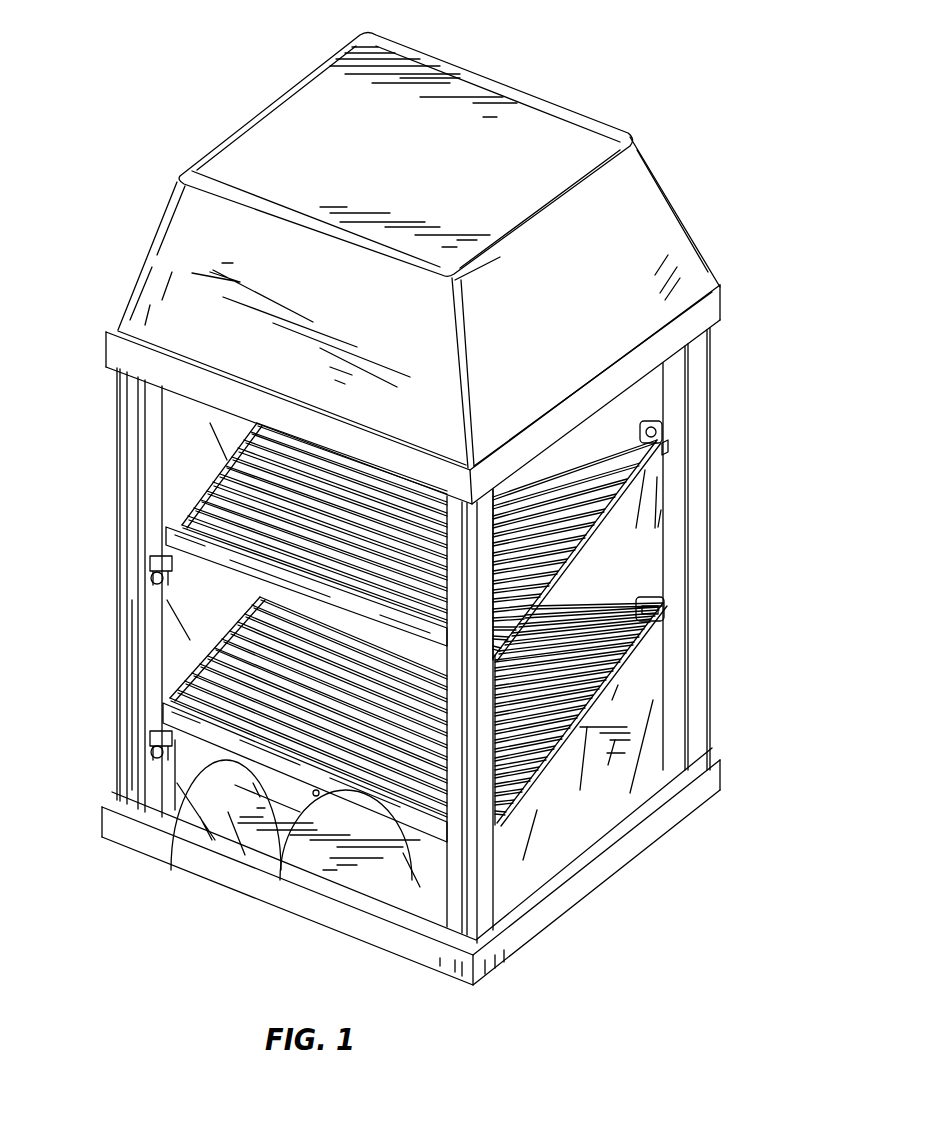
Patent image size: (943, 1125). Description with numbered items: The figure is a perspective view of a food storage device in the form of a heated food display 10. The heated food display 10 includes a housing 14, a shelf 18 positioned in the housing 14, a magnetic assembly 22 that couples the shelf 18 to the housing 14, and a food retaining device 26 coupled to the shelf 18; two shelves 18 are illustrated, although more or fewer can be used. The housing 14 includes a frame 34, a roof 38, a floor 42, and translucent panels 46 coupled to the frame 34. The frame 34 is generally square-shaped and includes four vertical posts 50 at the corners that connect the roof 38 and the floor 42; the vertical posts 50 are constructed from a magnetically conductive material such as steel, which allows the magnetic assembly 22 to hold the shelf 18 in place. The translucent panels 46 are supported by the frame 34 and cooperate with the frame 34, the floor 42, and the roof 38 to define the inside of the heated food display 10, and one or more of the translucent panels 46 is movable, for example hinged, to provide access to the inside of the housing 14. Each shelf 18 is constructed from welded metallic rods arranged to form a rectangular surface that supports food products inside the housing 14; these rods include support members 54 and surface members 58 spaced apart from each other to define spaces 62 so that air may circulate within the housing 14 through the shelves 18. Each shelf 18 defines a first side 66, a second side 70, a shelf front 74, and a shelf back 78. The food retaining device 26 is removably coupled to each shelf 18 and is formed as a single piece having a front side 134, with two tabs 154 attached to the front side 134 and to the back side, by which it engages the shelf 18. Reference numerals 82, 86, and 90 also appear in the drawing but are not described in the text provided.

The heated food display 10 is at (168, 66).
The housing 14 is at (90, 366).
The shelf 18 is at (205, 448).
The magnetic assembly 22 is at (146, 591).
The food retaining device 26 is at (200, 547).
The frame 34 is at (122, 460).
The roof 38 is at (545, 118).
The floor 42 is at (575, 833).
The translucent panels 46 is at (638, 672).
The vertical posts 50 is at (132, 497).
The support members 54 is at (574, 528).
The surface members 58 is at (590, 545).
The spaces 62 is at (600, 550).
The first side 66 is at (206, 484).
The second side 70 is at (580, 560).
The shelf front 74 is at (240, 592).
The shelf back 78 is at (636, 403).
The pin 82 is at (664, 424).
The wheel 86 is at (160, 752).
The front rail 90 is at (170, 722).
The front side 134 is at (316, 798).
The tabs 154 is at (248, 797).